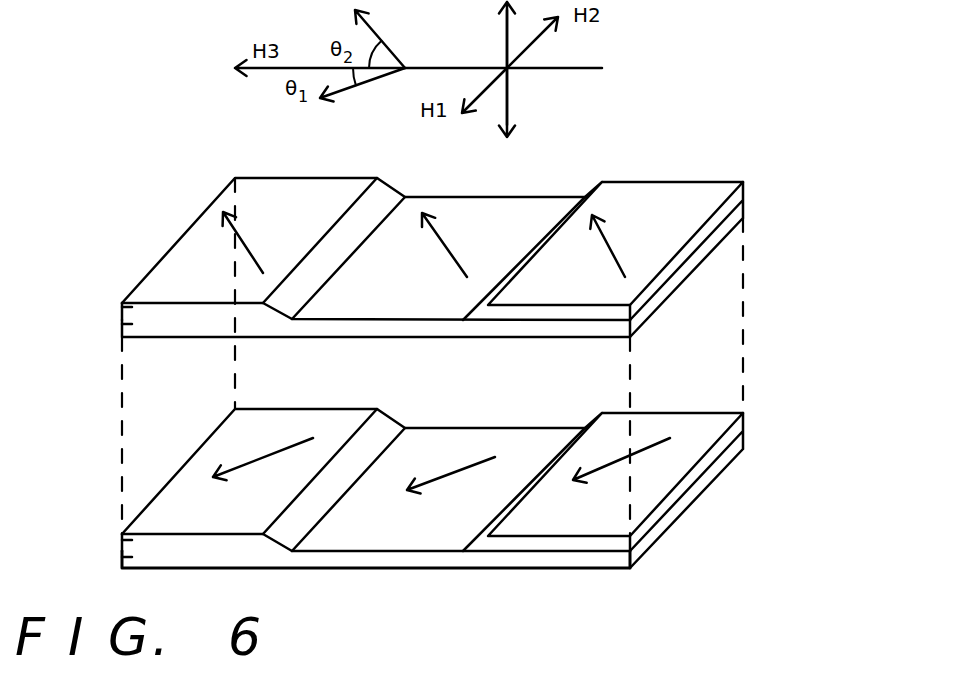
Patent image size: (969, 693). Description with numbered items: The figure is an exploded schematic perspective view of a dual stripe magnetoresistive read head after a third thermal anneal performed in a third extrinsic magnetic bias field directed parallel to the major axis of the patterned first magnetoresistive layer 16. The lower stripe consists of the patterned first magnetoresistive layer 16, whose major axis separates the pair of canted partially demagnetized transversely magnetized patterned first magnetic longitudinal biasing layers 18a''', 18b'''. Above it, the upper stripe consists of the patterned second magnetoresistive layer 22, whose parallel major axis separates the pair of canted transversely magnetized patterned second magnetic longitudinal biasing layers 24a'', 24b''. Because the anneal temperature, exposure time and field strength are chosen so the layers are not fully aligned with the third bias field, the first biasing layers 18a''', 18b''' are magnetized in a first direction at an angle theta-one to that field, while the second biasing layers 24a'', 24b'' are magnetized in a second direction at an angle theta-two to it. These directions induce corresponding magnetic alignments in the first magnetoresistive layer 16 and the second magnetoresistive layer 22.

The canted transversely magnetized patterned second magnetic longitudinal biasing la 24a'' is at (381, 249).
The patterned second magnetoresistive (MR) layer 22 is at (122, 325).
The canted transversely magnetized patterned second magnetic longitudinal biasing la 24b'' is at (733, 258).
The canted partially demagnetized transversely magnetized patterned first magnetic l 18a''' is at (377, 480).
The patterned first magnetoresistive (MR) layer 16 is at (120, 558).
The canted partially demagnetized transversely magnetized patterned first magnetic l 18b''' is at (737, 489).